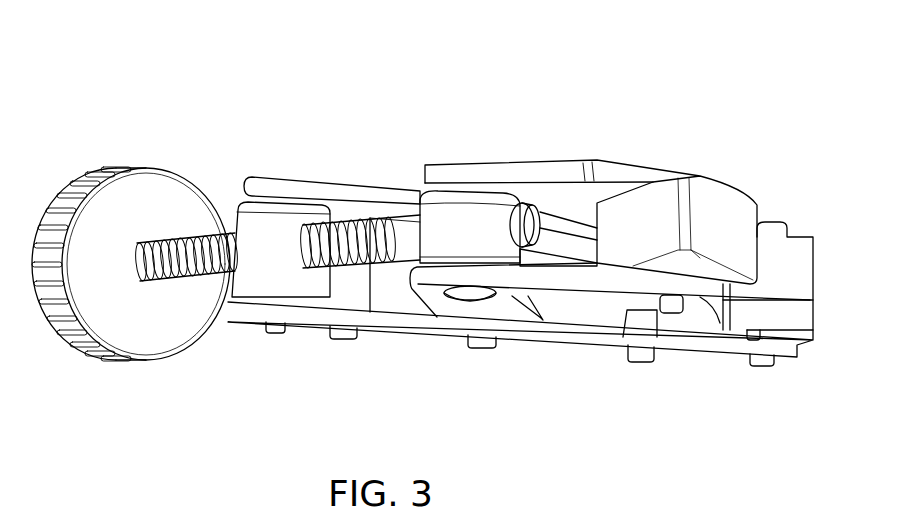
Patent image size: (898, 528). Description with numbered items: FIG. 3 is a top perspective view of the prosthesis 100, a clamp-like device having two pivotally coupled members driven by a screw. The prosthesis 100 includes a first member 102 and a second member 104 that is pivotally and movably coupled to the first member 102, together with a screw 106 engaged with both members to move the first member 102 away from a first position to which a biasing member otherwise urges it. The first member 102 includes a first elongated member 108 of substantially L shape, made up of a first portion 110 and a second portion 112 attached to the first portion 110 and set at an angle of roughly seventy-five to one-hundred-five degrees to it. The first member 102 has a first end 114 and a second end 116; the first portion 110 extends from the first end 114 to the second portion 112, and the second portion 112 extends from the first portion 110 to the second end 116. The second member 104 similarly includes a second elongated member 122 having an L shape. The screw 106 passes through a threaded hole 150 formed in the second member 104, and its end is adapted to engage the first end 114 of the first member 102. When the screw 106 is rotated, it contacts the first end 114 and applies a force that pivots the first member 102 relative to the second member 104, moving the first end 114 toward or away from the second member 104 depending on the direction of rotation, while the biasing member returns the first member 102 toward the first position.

The prosthesis 100 is at (690, 62).
The first member 102 is at (531, 162).
The second member 104 is at (373, 335).
The screw 106 is at (202, 243).
The first elongated member 108 is at (568, 160).
The first portion 110 is at (630, 297).
The second portion 112 is at (423, 314).
The first end 114 is at (703, 308).
The second end 116 is at (540, 330).
The second elongated member 122 is at (390, 332).
The threaded hole 150 is at (306, 243).